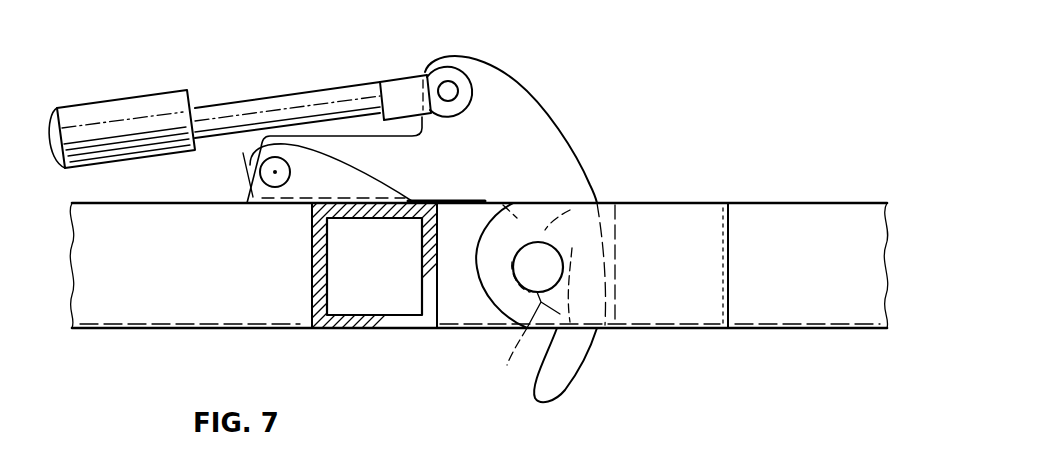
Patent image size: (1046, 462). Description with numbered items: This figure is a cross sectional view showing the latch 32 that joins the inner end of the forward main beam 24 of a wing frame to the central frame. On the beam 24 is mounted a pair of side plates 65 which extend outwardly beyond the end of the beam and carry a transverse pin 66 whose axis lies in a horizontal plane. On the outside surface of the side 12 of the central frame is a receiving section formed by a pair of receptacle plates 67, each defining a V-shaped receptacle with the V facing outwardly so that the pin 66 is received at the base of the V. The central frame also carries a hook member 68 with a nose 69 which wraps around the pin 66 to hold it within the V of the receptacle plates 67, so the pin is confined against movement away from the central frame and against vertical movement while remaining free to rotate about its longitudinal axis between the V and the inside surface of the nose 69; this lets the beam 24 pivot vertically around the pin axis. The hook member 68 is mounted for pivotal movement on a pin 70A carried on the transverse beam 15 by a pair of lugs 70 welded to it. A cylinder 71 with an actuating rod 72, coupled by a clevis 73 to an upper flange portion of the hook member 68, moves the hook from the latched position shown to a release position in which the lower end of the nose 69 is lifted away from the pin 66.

The side 12 is at (303, 252).
The transverse beam 15 is at (144, 322).
The forward main beam 24 is at (853, 200).
The latch 32 is at (628, 128).
The side plates 65 is at (661, 233).
The transverse pin 66 is at (527, 258).
The receptacle plates 67 is at (517, 354).
The hook member 68 is at (524, 111).
The nose 69 is at (569, 366).
The lugs 70 is at (345, 182).
The pin 70A is at (258, 165).
The cylinder 71 is at (133, 108).
The actuating rod 72 is at (297, 98).
The clevis 73 is at (412, 87).